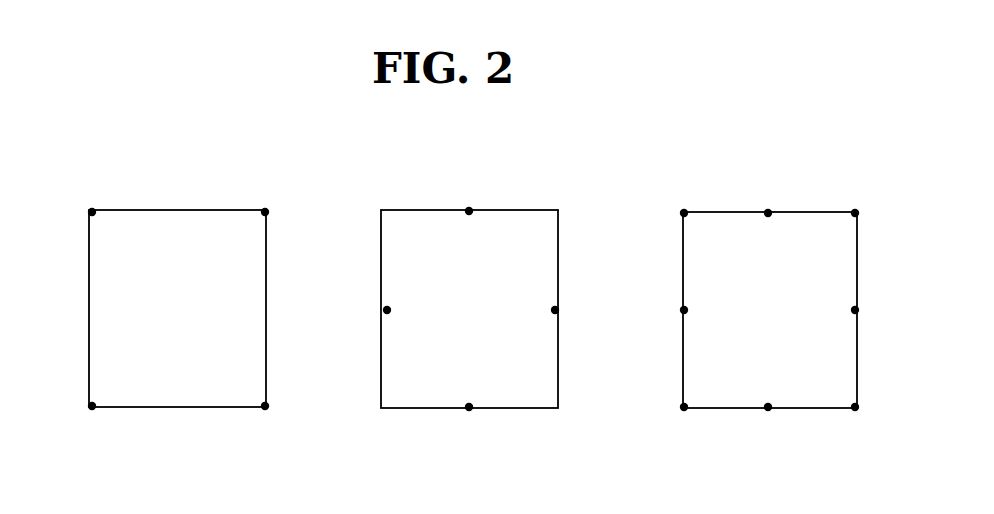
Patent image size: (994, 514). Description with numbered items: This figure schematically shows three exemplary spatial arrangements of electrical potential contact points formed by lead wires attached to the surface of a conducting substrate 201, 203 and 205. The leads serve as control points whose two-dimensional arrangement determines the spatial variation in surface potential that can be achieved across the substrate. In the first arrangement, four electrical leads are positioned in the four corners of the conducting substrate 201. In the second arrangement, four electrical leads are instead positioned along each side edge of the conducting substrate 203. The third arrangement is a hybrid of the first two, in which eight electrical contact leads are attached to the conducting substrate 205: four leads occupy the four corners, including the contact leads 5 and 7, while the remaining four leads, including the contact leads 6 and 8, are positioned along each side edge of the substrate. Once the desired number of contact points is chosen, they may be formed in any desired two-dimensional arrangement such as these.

The conducting substrate 201 is at (178, 306).
The conducting substrate 203 is at (469, 307).
The conducting substrate 205 is at (768, 307).
The electrical contact lead 5 is at (880, 452).
The electrical contact lead 6 is at (798, 452).
The electrical contact lead 7 is at (628, 427).
The electrical contact lead 8 is at (627, 328).